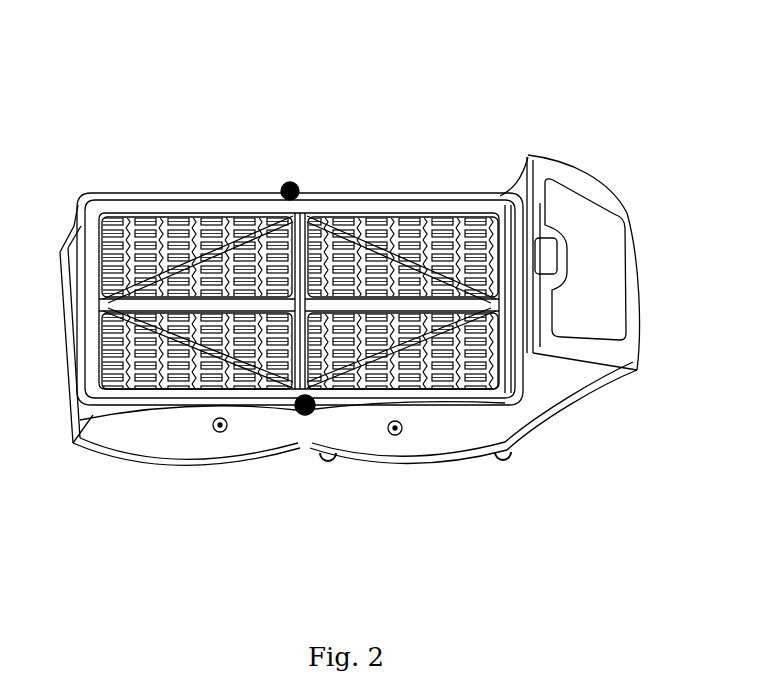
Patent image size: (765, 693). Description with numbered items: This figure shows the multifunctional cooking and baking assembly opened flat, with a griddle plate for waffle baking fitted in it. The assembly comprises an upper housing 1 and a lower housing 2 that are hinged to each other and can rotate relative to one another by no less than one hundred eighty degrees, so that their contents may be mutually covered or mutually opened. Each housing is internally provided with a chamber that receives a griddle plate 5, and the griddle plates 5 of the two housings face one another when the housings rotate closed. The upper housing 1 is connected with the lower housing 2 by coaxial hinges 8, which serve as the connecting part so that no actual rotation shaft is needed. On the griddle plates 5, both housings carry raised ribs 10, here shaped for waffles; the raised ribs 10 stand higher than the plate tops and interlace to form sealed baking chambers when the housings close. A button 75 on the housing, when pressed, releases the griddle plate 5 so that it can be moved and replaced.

The upper housing 1 is at (182, 437).
The lower housing 2 is at (433, 432).
The griddle plate 5 is at (453, 200).
The hinge 8 is at (284, 188).
The raised rib 10 is at (100, 190).
The button 75 is at (396, 434).